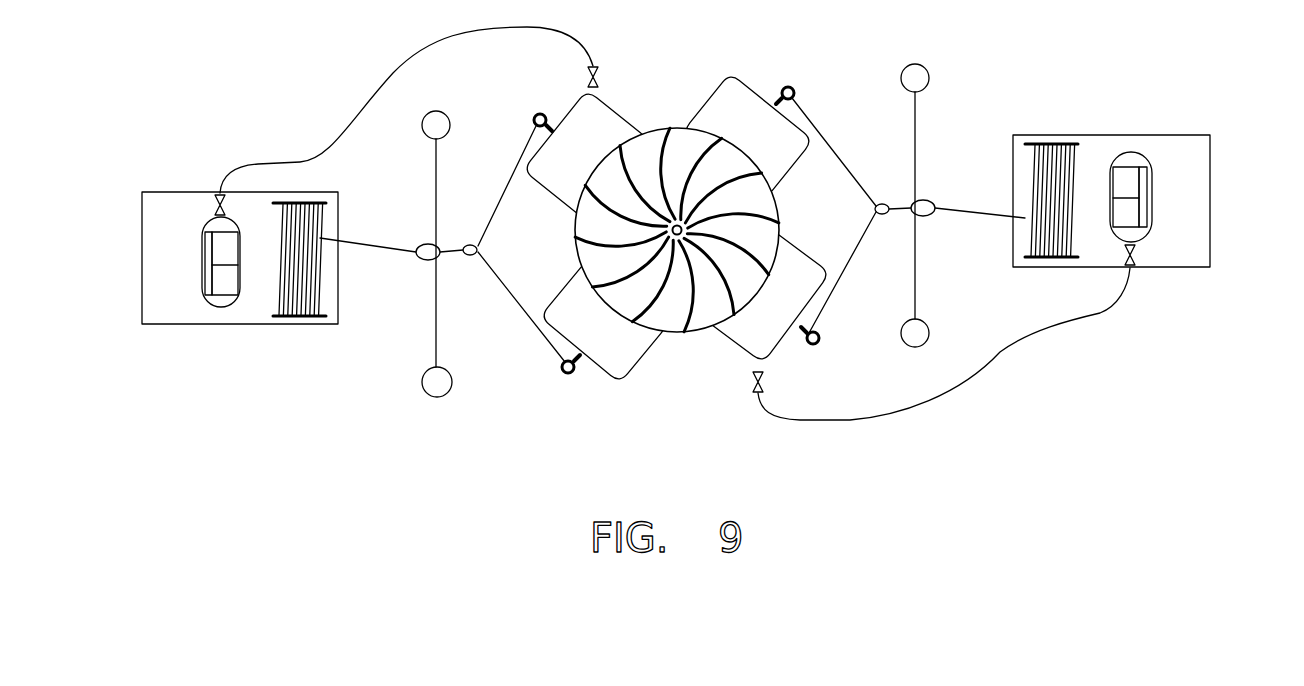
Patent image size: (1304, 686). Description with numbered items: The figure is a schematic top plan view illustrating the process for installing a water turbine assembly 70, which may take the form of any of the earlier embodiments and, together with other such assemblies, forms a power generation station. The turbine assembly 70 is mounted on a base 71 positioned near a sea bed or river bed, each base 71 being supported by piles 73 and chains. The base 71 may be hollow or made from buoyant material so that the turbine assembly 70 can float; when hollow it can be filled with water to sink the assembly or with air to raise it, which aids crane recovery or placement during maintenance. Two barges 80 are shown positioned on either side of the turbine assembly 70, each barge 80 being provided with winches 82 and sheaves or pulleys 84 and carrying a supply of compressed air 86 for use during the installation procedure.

The turbine assembly 70 is at (655, 112).
The base 71 is at (585, 118).
The pile 73 is at (428, 130).
The barge 80 is at (126, 236).
The winch 82 is at (302, 318).
The sheave/pulley 84 is at (533, 116).
The supply of compressed air 86 is at (222, 302).